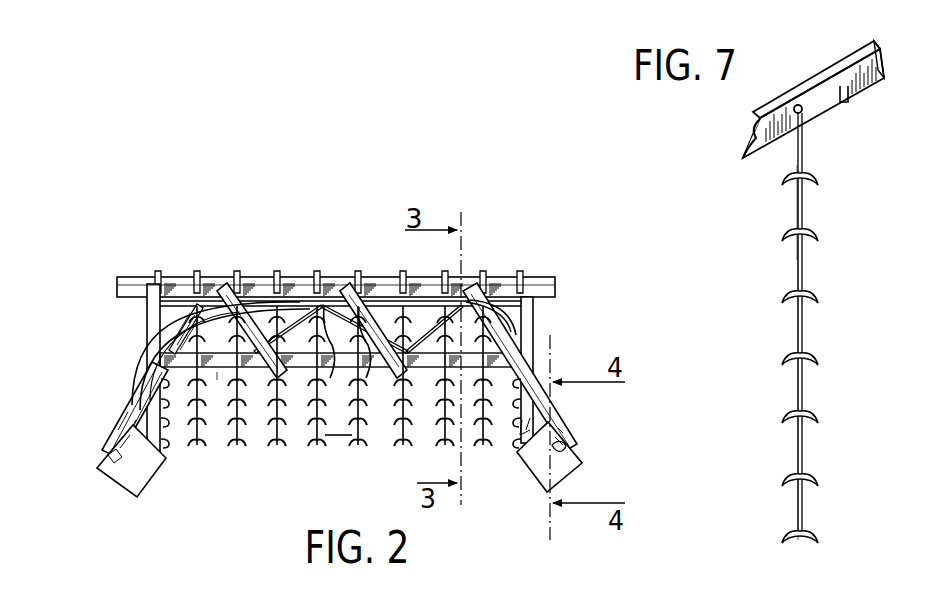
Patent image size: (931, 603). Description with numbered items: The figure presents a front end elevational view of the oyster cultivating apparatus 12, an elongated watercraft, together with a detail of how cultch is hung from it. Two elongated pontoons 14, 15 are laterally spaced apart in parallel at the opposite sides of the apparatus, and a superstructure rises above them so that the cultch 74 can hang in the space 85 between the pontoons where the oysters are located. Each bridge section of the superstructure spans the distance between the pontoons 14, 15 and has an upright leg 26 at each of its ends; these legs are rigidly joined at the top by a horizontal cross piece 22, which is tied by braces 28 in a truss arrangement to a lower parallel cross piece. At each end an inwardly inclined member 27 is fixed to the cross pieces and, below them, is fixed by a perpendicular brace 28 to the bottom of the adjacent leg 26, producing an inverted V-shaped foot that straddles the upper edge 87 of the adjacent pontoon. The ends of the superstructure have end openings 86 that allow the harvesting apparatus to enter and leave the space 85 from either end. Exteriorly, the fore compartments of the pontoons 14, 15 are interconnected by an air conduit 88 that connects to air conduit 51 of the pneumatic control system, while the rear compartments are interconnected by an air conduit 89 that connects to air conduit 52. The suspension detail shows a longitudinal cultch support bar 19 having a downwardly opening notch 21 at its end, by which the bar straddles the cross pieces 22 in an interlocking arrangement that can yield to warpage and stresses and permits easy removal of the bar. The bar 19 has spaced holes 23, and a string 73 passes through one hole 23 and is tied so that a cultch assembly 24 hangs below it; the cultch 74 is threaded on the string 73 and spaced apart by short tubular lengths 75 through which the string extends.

In FIG. 2, the oyster cultivating apparatus 12 is at (177, 272).
In FIG. 2, the cross piece 22 is at (262, 278).
In FIG. 2, the upright leg 26 is at (535, 322).
In FIG. 2, the inwardly inclined member 27 is at (548, 372).
In FIG. 2, the brace 28 is at (249, 339).
In FIG. 2, the air conduit 88 is at (150, 358).
In FIG. 2, the air conduit 89 is at (160, 352).
In FIG. 2, the end opening 86 is at (219, 390).
In FIG. 2, the air conduit 51 is at (333, 355).
In FIG. 2, the air conduit 52 is at (377, 355).
In FIG. 2, the space 85 is at (339, 422).
In FIG. 2, the pontoon 14 is at (152, 472).
In FIG. 2, the pontoon 15 is at (536, 484).
In FIG. 2, the upper edge 87 is at (560, 415).
In FIG. 2, the cultch assembly 24 is at (273, 449).
In FIG. 7, the cultch assembly 24 is at (811, 271).
In FIG. 7, the cultch support bar 19 is at (822, 73).
In FIG. 7, the notch 21 is at (845, 102).
In FIG. 7, the hole 23 is at (803, 113).
In FIG. 7, the string 73 is at (803, 142).
In FIG. 7, the cultch 74 is at (820, 413).
In FIG. 7, the tubular length 75 is at (797, 257).